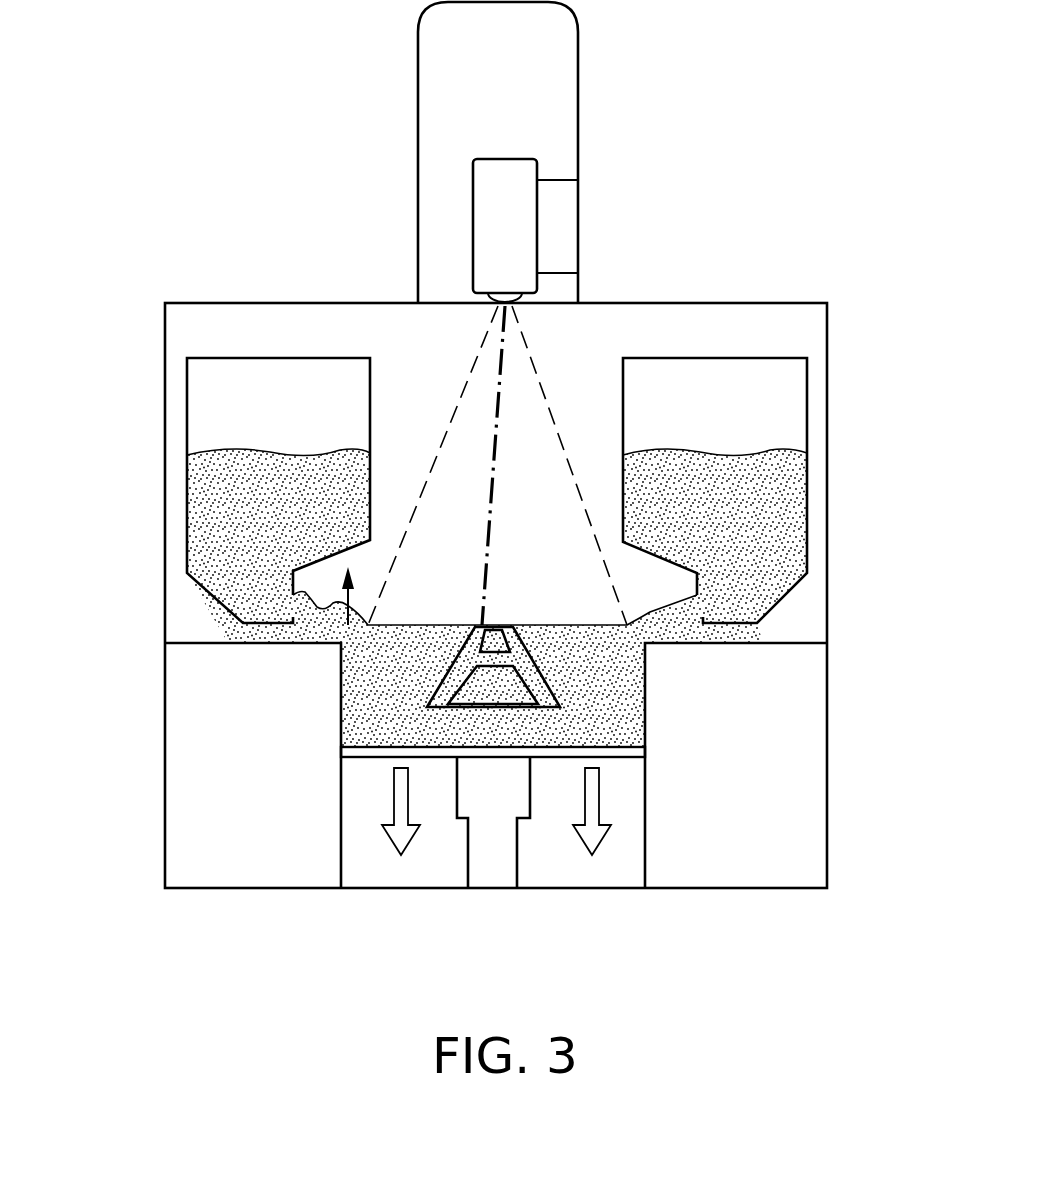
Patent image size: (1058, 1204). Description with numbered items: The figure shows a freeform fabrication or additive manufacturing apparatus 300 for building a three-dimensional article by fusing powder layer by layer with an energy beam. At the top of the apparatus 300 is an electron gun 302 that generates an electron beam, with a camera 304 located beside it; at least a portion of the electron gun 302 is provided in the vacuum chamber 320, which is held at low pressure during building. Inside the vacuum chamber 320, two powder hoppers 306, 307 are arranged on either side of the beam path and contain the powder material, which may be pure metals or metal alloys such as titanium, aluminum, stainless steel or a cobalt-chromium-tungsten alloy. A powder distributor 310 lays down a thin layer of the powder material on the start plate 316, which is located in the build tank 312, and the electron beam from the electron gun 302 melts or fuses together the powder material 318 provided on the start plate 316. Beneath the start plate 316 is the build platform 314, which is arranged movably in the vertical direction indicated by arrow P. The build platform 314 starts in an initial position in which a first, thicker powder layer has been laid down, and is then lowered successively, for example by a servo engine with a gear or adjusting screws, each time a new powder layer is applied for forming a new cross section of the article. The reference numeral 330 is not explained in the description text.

The additive manufacturing apparatus 300 is at (800, 122).
The electron gun 302 is at (528, 87).
The camera 304 is at (506, 224).
The powder hopper 306 is at (218, 523).
The powder hopper 307 is at (777, 525).
The powder distributor 310 is at (342, 605).
The build tank 312 is at (340, 819).
The build platform 314 is at (547, 760).
The start plate 316 is at (530, 712).
The powder material 318 is at (600, 667).
The vacuum chamber 320 is at (825, 830).
The powder bed 330 is at (463, 665).